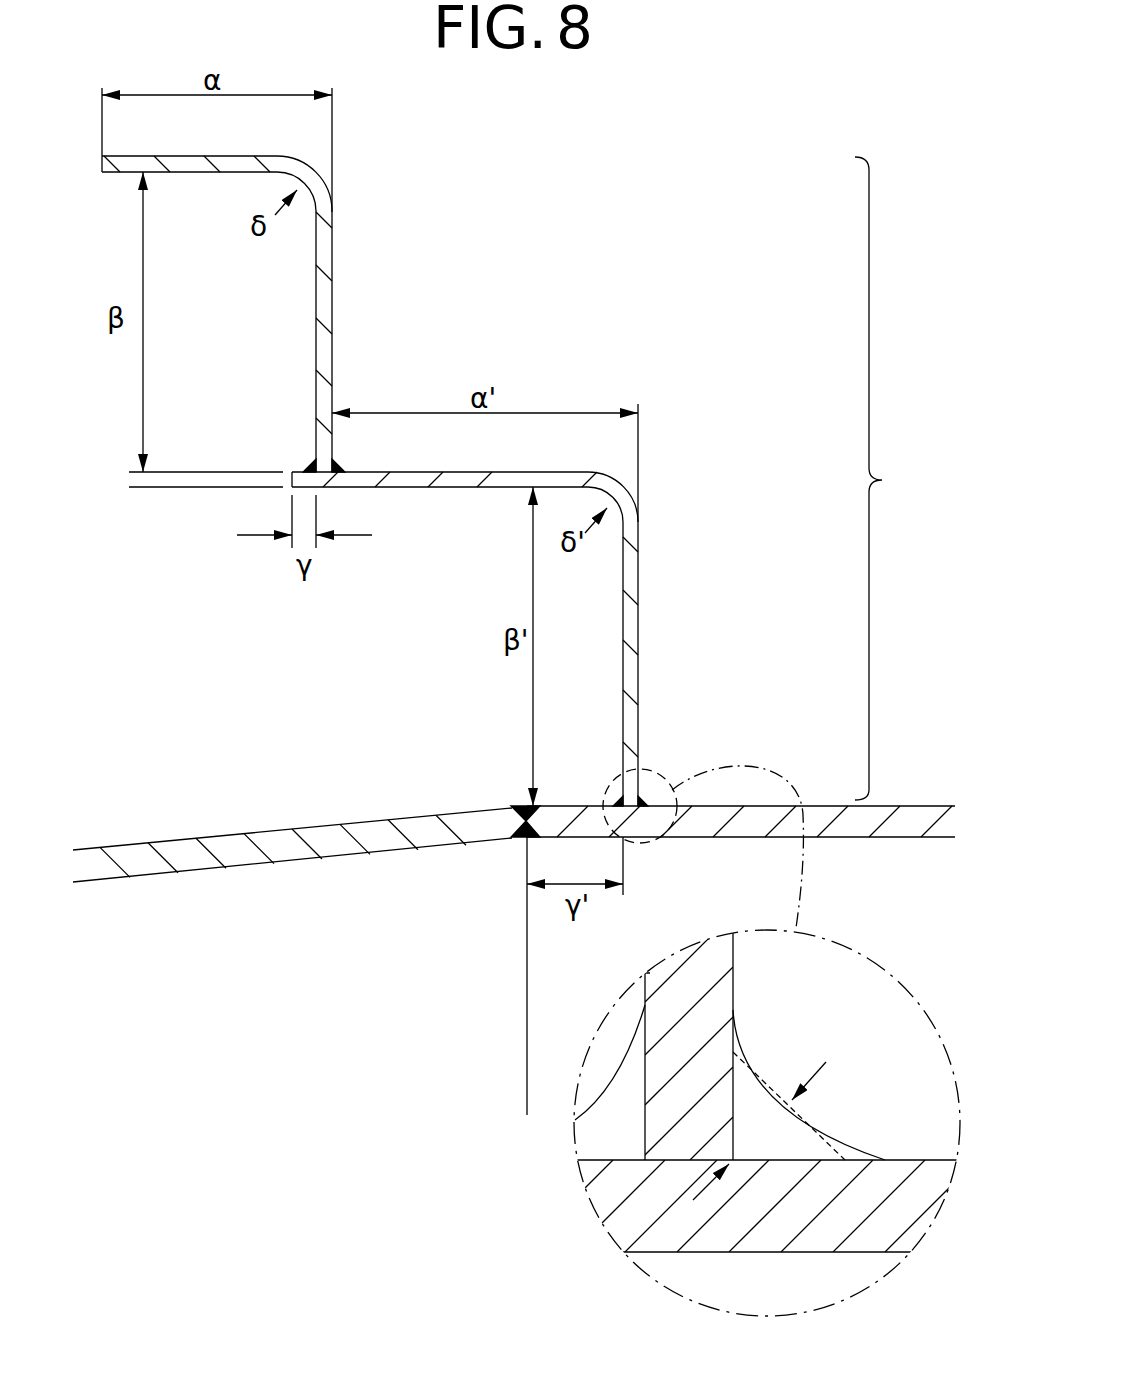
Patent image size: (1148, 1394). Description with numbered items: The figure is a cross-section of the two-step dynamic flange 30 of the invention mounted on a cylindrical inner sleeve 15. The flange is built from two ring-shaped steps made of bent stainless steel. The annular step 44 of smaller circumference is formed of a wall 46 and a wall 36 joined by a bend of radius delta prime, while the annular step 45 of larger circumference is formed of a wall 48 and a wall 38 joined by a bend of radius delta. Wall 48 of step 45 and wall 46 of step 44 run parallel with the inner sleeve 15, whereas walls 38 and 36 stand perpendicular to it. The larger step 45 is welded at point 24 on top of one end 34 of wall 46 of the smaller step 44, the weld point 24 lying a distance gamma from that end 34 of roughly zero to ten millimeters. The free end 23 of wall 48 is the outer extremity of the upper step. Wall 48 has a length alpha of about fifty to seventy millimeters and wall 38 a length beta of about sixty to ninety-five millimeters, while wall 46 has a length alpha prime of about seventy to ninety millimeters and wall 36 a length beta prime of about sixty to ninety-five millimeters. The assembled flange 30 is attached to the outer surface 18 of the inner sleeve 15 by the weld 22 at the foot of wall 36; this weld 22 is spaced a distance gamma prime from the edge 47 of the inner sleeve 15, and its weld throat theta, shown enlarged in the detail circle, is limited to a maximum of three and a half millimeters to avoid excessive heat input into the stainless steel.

The cylindrical inner sleeve 15 is at (846, 838).
The outer surface of inner sleeve 18 is at (826, 806).
The weld 22 is at (648, 786).
The free end of flange 23 is at (104, 165).
The weld point 24 is at (313, 470).
The two-step dynamic flange 30 is at (884, 478).
The end of wall 46 34 is at (284, 486).
The wall of step 44 36 is at (640, 666).
The wall of step 45 38 is at (333, 313).
The annular step 44 is at (674, 598).
The annular step 45 is at (448, 256).
The wall of step 44 46 is at (459, 487).
The edge of inner sleeve 47 is at (512, 838).
The wall of step 45 48 is at (252, 166).